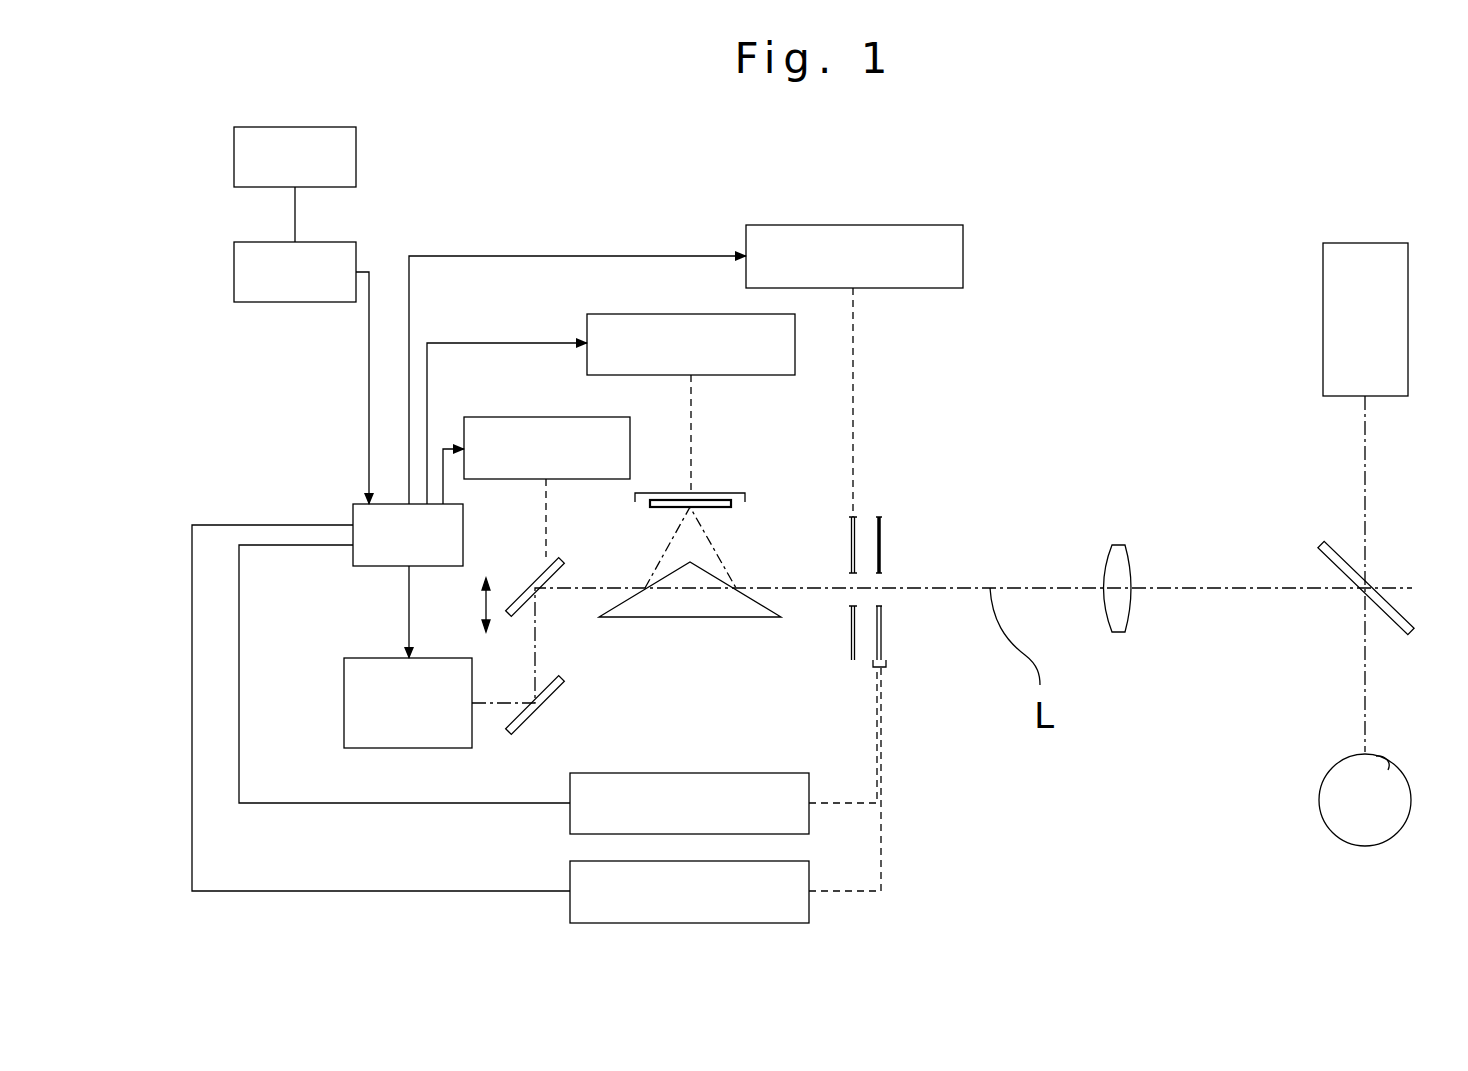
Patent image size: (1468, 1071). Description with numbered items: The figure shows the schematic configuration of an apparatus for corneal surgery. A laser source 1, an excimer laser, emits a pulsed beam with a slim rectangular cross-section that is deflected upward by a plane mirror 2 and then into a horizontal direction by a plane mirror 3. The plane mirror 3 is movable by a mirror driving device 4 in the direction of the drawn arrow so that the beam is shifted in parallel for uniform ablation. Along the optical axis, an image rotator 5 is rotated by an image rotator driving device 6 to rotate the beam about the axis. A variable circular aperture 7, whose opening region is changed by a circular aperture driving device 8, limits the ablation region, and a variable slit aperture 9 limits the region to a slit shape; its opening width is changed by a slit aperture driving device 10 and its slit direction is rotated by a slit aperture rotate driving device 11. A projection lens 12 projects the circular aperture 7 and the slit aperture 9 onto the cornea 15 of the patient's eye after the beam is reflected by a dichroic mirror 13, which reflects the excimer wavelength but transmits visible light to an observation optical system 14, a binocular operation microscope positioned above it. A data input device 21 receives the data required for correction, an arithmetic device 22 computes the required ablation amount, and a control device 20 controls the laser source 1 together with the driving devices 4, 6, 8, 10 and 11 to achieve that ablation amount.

The laser source 1 is at (344, 695).
The plane mirror 2 is at (556, 692).
The plane mirror 3 is at (530, 582).
The mirror driving device 4 is at (572, 417).
The image rotator 5 is at (720, 493).
The image rotator driving device 6 is at (650, 314).
The variable circular aperture 7 is at (852, 547).
The circular aperture driving device 8 is at (891, 288).
The variable slit aperture 9 is at (882, 545).
The slit aperture driving device 10 is at (735, 773).
The slit aperture rotate driving device 11 is at (570, 878).
The projection lens 12 is at (1108, 560).
The dichroic mirror 13 is at (1330, 557).
The observation optical system 14 is at (1323, 323).
The cornea 15 is at (1335, 770).
The control device 20 is at (353, 518).
The data input device 21 is at (356, 160).
The arithmetic device 22 is at (293, 302).